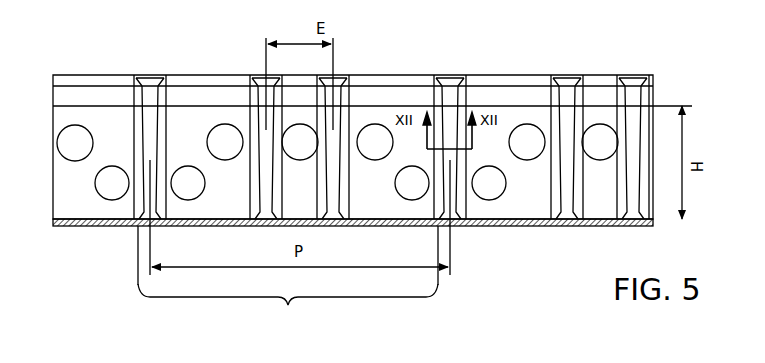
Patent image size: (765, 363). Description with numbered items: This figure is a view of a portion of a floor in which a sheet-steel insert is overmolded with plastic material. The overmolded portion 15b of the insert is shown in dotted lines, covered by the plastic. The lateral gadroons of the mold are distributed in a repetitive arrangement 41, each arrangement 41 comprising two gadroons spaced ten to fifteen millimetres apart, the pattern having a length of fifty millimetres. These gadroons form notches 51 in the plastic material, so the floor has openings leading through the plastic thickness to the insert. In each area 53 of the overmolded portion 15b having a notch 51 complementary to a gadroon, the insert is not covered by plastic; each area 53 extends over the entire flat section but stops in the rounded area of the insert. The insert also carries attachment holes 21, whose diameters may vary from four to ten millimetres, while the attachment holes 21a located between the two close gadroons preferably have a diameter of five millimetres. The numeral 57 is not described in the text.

The overmolded portion 15b is at (68, 112).
The attachment holes located between the two close gadroons 21a is at (297, 135).
The attachment holes 21 is at (378, 133).
The notches 51 is at (571, 124).
The area 53 is at (567, 170).
The slot bottom 57 is at (572, 226).
The repetitive arrangement 41 is at (288, 280).